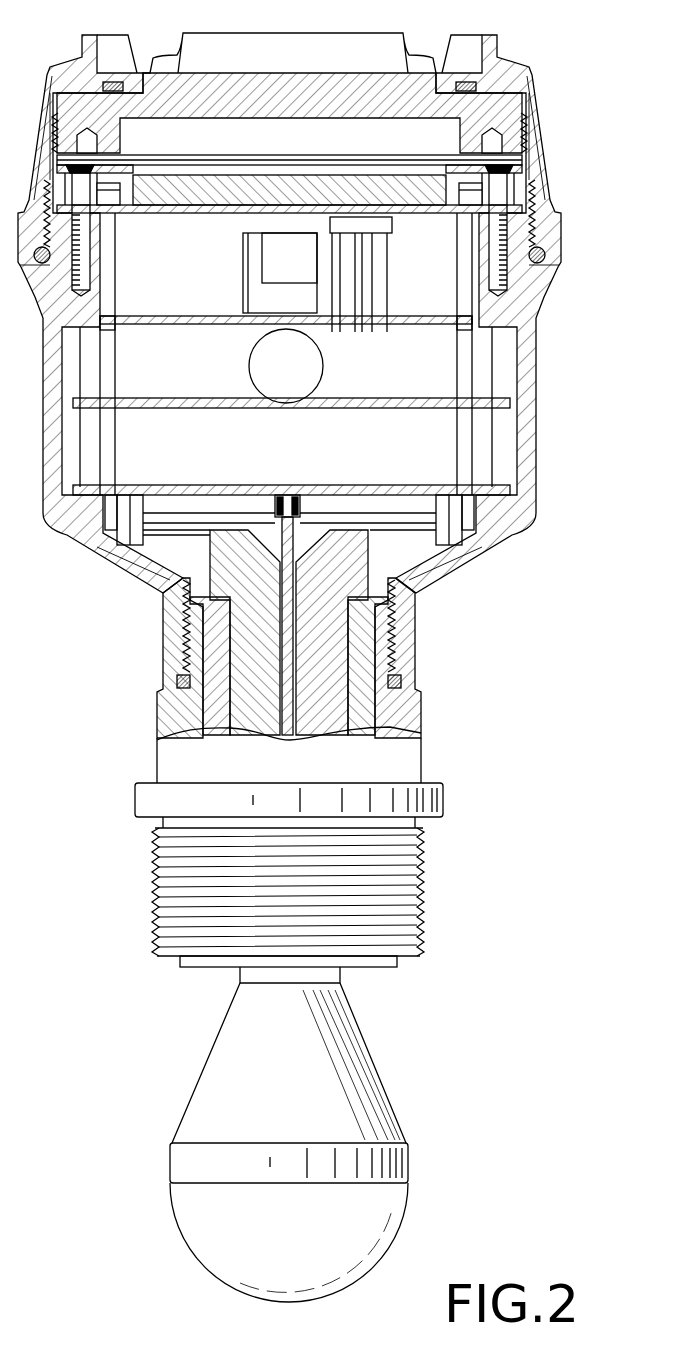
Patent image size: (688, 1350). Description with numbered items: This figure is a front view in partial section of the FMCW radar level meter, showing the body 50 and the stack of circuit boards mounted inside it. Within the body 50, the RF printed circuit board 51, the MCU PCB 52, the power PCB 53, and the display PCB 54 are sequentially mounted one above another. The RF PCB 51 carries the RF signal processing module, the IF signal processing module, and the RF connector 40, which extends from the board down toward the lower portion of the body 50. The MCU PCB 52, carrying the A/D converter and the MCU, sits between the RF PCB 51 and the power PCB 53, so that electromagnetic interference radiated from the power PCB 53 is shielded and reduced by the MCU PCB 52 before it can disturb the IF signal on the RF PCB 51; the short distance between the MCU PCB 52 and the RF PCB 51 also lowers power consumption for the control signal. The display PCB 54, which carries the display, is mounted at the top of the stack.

The RF connector 40 is at (287, 495).
The body 50 is at (558, 290).
The RF printed circuit board 51 is at (431, 485).
The MCU PCB 52 is at (193, 398).
The power PCB 53 is at (445, 318).
The display PCB 54 is at (152, 210).